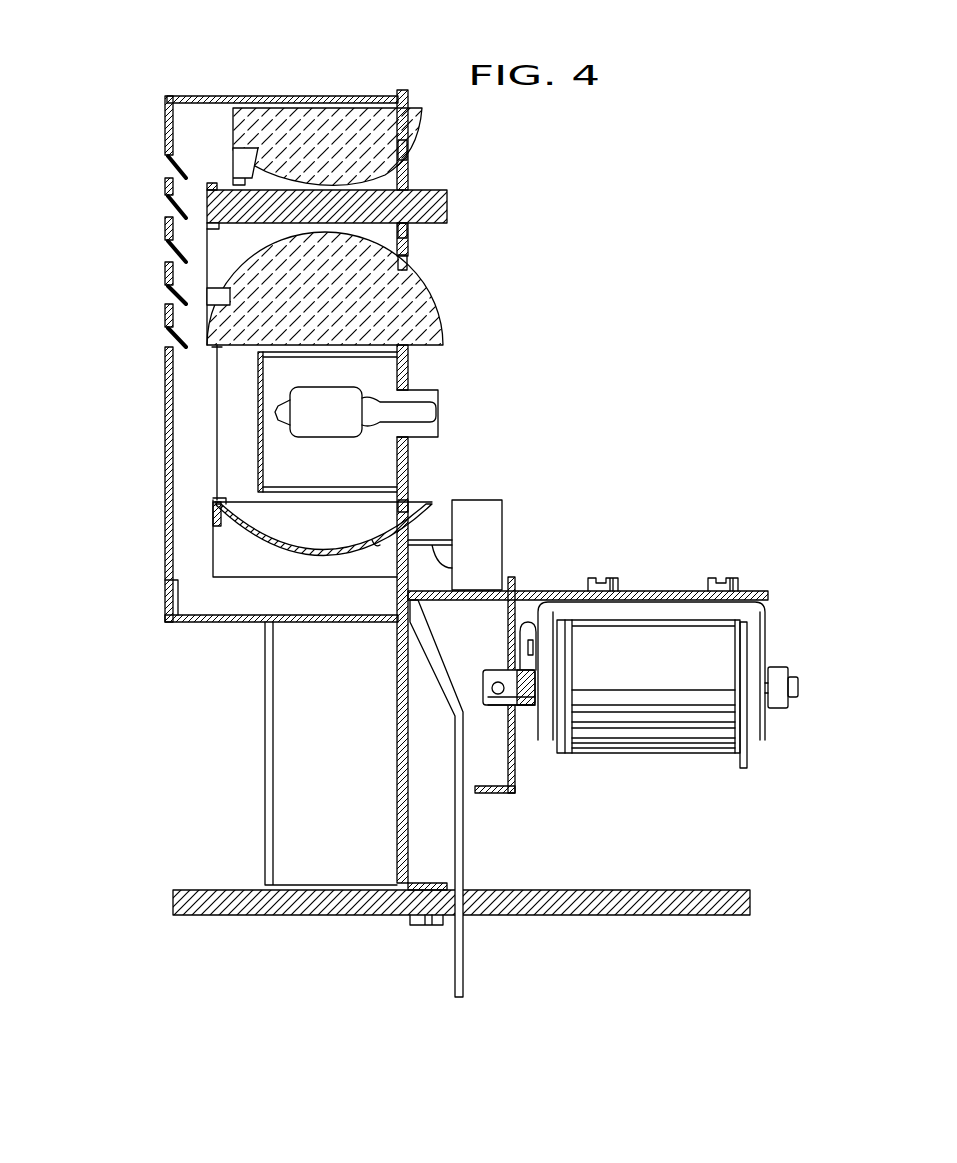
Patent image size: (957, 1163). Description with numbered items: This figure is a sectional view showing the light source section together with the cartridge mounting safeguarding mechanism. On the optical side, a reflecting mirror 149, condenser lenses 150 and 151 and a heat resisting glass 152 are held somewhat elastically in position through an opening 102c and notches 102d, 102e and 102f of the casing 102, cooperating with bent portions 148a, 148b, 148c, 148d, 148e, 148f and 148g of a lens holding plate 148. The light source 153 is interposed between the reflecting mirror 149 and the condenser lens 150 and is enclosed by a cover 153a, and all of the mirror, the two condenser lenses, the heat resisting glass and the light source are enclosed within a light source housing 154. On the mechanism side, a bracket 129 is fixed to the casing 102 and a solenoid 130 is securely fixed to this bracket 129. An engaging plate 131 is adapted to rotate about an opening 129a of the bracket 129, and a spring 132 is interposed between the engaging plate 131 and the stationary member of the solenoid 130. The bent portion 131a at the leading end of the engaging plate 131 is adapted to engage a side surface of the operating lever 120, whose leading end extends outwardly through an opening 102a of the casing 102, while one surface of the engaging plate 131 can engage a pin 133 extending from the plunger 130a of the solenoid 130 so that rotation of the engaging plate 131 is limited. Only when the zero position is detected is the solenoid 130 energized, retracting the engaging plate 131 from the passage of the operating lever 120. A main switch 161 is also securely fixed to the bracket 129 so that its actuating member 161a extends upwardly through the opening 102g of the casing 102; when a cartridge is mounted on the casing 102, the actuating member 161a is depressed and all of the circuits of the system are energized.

The casing 102 is at (397, 777).
The opening 102a is at (464, 918).
The opening 102c is at (400, 503).
The notch 102d is at (409, 263).
The notch 102e is at (410, 224).
The notch 102f is at (410, 148).
The opening 102g is at (372, 541).
The operating lever 120 is at (454, 949).
The bracket 129 is at (667, 591).
The opening 129a is at (513, 580).
The solenoid 130 is at (650, 754).
The plunger 130a is at (483, 686).
The engaging plate 131 is at (508, 620).
The bent portion 131a is at (482, 797).
The spring 132 is at (516, 728).
The pin 133 is at (498, 702).
The lens holding plate 148 is at (213, 546).
The bent portion 148a is at (228, 511).
The bent portion 148b is at (217, 498).
The bent portion 148c is at (212, 350).
The bent portion 148d is at (232, 289).
The bent portion 148e is at (213, 229).
The bent portion 148f is at (212, 184).
The bent portion 148g is at (238, 129).
The reflecting mirror 149 is at (250, 534).
The condenser lens 150 is at (434, 300).
The condenser lens 151 is at (422, 118).
The heat resisting glass 152 is at (448, 200).
The light source 153 is at (343, 424).
The cover 153a is at (258, 411).
The light source housing 154 is at (166, 120).
The main switch 161 is at (503, 516).
The actuating member 161a is at (440, 555).